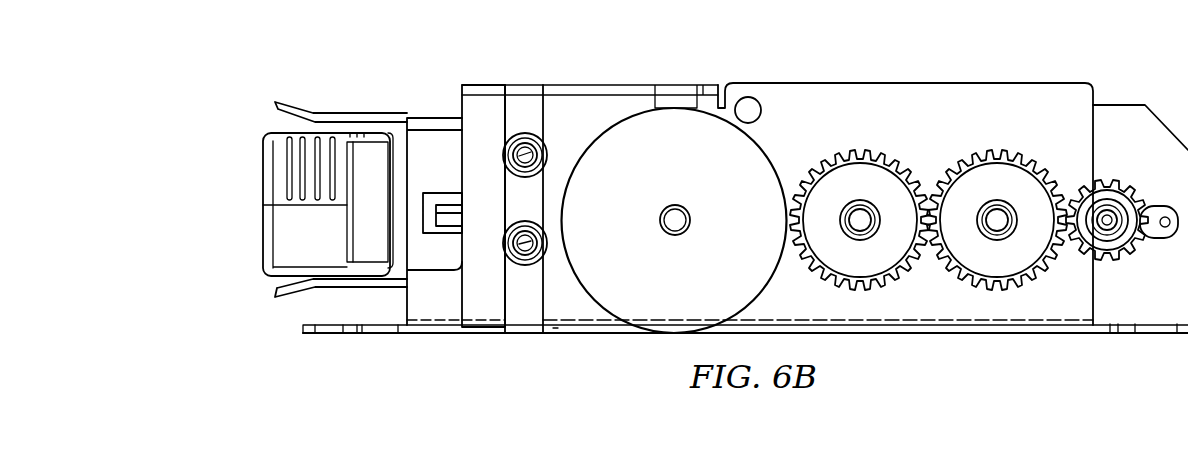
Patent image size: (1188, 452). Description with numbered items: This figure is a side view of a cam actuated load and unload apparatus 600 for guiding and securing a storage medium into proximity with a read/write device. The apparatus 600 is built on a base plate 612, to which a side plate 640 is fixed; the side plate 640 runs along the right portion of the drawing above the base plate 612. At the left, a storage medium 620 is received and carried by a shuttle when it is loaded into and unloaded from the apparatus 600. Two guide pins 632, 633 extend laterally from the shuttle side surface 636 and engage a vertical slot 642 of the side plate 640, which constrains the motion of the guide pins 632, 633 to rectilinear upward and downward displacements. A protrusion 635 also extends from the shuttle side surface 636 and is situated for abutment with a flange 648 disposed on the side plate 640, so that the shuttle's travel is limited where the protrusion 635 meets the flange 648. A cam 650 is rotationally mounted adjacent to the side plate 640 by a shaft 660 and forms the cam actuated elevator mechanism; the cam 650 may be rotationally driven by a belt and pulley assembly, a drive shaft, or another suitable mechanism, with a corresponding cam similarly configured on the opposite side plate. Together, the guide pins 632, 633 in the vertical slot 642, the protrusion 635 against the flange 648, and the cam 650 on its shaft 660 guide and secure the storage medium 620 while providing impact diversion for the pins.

The load and unload apparatus 600 is at (215, 181).
The base plate 612 is at (330, 336).
The storage medium 620 is at (261, 227).
The guide pin 632 is at (506, 246).
The guide pin 633 is at (546, 152).
The protrusion 635 is at (448, 200).
The shuttle side surface 636 is at (431, 122).
The side plate 640 is at (910, 82).
The vertical slot 642 is at (530, 312).
The flange 648 is at (488, 115).
The cam 650 is at (757, 160).
The shaft 660 is at (659, 222).